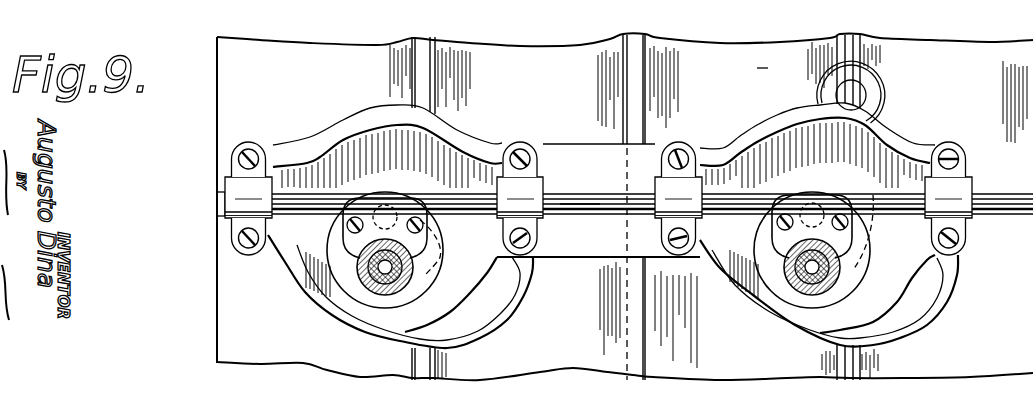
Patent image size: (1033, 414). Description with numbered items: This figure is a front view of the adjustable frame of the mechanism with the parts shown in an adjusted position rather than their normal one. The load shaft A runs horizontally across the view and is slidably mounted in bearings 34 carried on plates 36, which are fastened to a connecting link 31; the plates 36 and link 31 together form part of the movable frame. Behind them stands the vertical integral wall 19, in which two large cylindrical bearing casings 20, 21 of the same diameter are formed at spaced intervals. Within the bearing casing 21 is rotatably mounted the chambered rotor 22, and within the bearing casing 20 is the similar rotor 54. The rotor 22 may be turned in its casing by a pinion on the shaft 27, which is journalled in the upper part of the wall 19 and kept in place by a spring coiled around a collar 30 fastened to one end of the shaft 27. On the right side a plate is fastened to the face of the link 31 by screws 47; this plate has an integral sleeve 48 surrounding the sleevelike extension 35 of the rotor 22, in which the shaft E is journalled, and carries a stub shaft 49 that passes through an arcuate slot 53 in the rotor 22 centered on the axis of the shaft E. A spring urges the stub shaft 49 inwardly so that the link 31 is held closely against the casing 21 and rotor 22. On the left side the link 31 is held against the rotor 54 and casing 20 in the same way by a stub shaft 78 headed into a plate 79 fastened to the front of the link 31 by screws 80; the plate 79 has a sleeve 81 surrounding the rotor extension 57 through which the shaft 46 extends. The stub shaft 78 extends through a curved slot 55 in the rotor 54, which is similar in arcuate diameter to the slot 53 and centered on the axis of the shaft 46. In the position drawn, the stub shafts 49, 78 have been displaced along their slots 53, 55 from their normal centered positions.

The vertical integral wall 19 is at (625, 206).
The bearing casing 20 is at (500, 312).
The bearing casing 21 is at (948, 274).
The rotor 22 is at (907, 297).
The shaft 27 is at (843, 95).
The collar 30 is at (866, 88).
The connecting link 31 is at (562, 162).
The bearings 34 is at (253, 185).
The sleevelike extension 35 is at (787, 273).
The plates 36 is at (355, 112).
The shaft 46 is at (397, 292).
The screws 47 is at (787, 214).
The sleeve 48 is at (810, 294).
The stub shaft 49 is at (820, 203).
The arcuate slot 53 is at (866, 258).
The rotor 54 is at (500, 279).
The curved slot 55 is at (437, 252).
The extension 57 is at (376, 290).
The stub shaft 78 is at (386, 205).
The plate 79 is at (343, 243).
The screws 80 is at (352, 216).
The sleeve 81 is at (364, 282).
The load shaft A is at (578, 215).
The shaft E is at (792, 282).